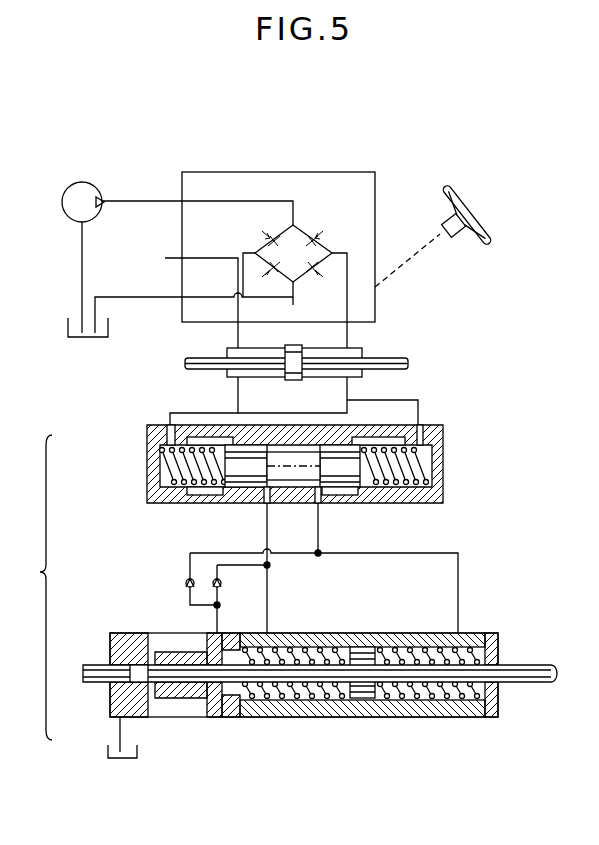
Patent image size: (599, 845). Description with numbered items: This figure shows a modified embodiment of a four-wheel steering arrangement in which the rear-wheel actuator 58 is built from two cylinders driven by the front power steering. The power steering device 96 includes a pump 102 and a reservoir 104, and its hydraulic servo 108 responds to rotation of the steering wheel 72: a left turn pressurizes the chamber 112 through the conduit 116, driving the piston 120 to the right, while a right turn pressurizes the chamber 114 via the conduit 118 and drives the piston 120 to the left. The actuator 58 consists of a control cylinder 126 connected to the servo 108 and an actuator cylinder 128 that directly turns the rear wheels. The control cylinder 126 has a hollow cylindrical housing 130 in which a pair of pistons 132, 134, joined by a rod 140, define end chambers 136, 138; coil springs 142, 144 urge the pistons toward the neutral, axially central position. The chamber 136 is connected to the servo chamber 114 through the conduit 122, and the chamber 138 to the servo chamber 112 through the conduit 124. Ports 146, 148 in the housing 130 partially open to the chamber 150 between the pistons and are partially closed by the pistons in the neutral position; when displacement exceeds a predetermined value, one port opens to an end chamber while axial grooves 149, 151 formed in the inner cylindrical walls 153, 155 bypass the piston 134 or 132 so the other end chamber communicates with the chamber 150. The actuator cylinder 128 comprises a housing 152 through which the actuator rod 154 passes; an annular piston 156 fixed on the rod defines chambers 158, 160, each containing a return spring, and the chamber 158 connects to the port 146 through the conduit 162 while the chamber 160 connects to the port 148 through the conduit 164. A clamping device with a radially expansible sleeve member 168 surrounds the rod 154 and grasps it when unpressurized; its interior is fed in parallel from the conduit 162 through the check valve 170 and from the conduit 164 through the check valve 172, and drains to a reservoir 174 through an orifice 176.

The actuator 58 is at (30, 587).
The steering wheel 72 is at (455, 232).
The power steering device 96 is at (312, 342).
The pump 102 is at (92, 182).
The reservoir 104 is at (68, 328).
The hydraulic servo 108 is at (257, 377).
The chamber 112 is at (227, 353).
The chamber 114 is at (355, 373).
The conduit 116 is at (178, 297).
The conduit 118 is at (347, 303).
The piston 120 is at (291, 345).
The conduit 122 is at (207, 413).
The conduit 124 is at (353, 400).
The control cylinder 126 is at (497, 436).
The actuator cylinder 128 is at (511, 603).
The hollow cylindrical housing 130 is at (443, 495).
The piston 132 is at (243, 505).
The piston 134 is at (357, 503).
The chamber 136 is at (160, 470).
The chamber 138 is at (443, 470).
The rod 140 is at (288, 490).
The coil spring 142 is at (185, 496).
The coil spring 144 is at (413, 503).
The port 146 is at (233, 503).
The port 148 is at (330, 503).
The axial grooves 149 is at (195, 437).
The chamber 150 is at (268, 508).
The axial grooves 151 is at (421, 432).
The hollow cylindrical housing 152 is at (352, 700).
The inner cylindrical wall 153 is at (160, 437).
The actuator rod 154 is at (537, 663).
The inner cylindrical wall 155 is at (425, 437).
The annular piston 156 is at (368, 700).
The chamber 158 is at (262, 700).
The chamber 160 is at (470, 700).
The conduit 162 is at (272, 597).
The conduit 164 is at (418, 555).
The radially expansible sleeve member 168 is at (188, 705).
The check valve 170 is at (240, 585).
The check valve 172 is at (178, 587).
The reservoir 174 is at (108, 750).
The orifice 176 is at (118, 703).